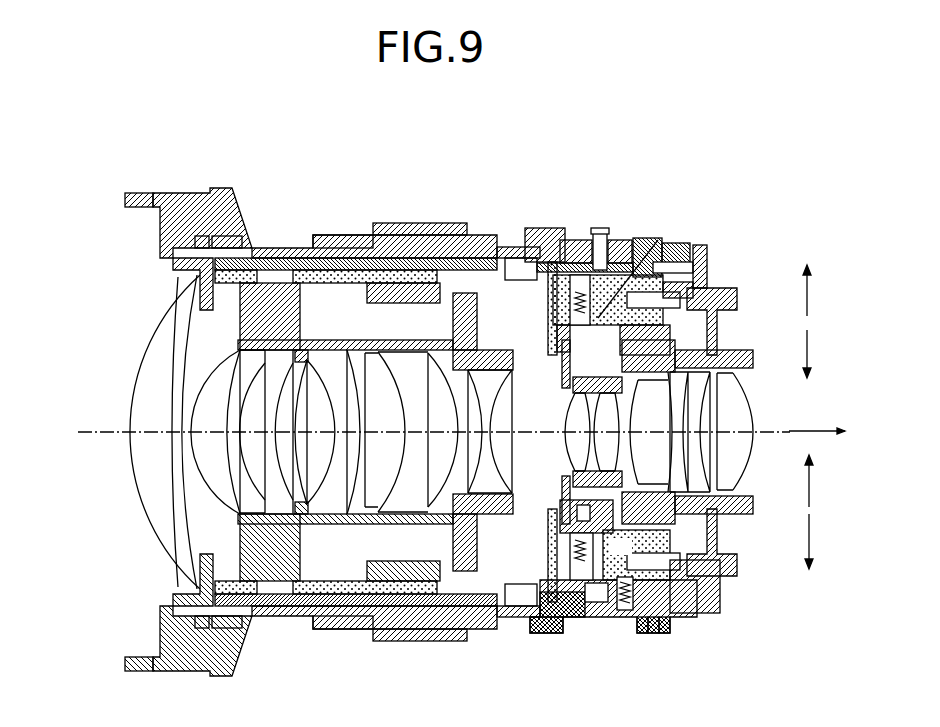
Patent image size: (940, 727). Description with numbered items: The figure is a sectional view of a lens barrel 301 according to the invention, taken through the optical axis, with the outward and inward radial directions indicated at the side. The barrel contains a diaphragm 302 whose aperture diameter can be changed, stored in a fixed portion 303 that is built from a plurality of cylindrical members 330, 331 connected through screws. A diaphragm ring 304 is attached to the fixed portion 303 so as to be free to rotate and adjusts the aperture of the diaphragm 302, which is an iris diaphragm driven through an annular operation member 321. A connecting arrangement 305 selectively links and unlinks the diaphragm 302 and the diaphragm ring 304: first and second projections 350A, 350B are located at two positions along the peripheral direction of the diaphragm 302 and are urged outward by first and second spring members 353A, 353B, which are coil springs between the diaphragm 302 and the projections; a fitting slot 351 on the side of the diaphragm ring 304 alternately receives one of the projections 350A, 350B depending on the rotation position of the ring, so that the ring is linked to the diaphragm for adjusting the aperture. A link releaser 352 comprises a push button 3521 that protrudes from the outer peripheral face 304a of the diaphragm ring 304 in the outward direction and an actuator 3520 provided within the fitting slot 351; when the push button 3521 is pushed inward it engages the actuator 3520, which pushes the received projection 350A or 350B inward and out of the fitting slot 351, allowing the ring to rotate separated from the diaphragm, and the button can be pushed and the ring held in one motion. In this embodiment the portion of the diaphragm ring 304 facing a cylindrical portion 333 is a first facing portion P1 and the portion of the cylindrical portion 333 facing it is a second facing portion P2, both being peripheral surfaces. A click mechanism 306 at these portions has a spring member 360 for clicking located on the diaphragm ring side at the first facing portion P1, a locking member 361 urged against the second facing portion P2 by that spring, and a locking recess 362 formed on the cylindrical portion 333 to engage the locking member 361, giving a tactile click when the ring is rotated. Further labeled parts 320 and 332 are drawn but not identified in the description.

The lens barrel 301 is at (859, 178).
The diaphragm 302 is at (530, 176).
The fixed portion 303 is at (401, 252).
The diaphragm ring 304 is at (547, 212).
The outer peripheral face 304a is at (567, 240).
The connecting arrangement 305 is at (718, 162).
The click mechanism 306 is at (733, 658).
The lens holder 320 is at (515, 283).
The operation member 321 is at (546, 333).
The cylindrical member 330 is at (355, 237).
The cylindrical member 331 is at (698, 258).
The exterior ring 332 is at (442, 222).
The cylindrical portion 333 is at (688, 617).
The first projection 350A is at (660, 240).
The second projection 350B is at (550, 620).
The fitting slot 351 is at (647, 232).
The link releaser 352 is at (648, 193).
The actuator 3520 is at (583, 240).
The push button 3521 is at (610, 232).
The first spring member 353A is at (680, 236).
The second spring member 353B is at (540, 626).
The spring member for clicking 360 is at (645, 632).
The locking member 361 is at (655, 632).
The locking recess 362 is at (665, 632).
The first facing portion P1 is at (596, 592).
The second facing portion P2 is at (611, 554).